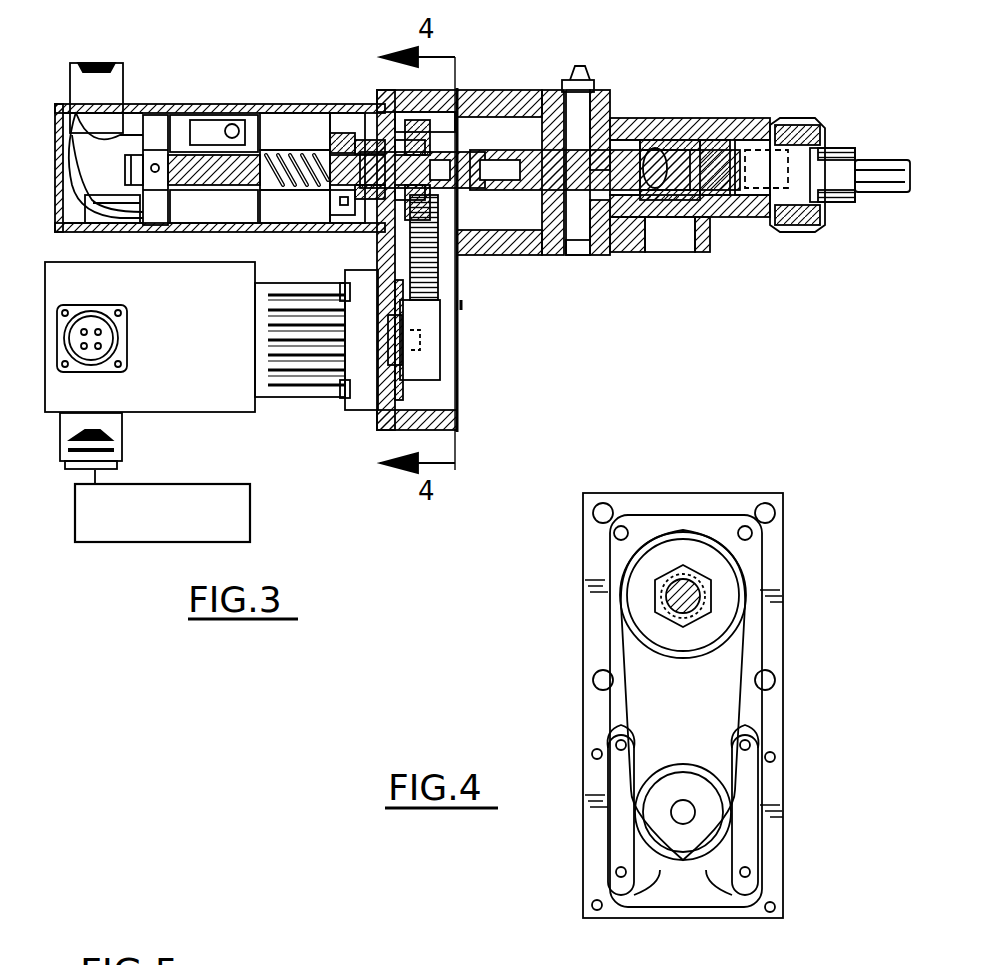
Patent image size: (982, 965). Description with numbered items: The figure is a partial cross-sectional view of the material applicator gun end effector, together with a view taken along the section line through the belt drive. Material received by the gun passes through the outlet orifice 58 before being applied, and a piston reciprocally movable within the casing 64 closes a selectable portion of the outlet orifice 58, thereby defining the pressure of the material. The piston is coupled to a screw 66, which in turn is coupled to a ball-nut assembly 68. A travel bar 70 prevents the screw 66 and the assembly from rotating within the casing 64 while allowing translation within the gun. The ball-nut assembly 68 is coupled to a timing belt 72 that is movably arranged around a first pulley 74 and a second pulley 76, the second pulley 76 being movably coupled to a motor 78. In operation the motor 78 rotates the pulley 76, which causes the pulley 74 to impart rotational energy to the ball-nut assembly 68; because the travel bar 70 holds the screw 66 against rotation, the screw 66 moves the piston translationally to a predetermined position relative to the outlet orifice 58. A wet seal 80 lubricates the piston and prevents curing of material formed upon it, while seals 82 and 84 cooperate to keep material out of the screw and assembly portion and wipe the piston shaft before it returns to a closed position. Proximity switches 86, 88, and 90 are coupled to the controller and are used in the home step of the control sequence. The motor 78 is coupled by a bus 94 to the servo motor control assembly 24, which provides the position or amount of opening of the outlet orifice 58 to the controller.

In FIG. 3, the servo motor control assembly 24 is at (250, 520).
In FIG. 3, the outlet orifice 58 is at (690, 120).
In FIG. 3, the casing 64 is at (755, 218).
In FIG. 3, the screw 66 is at (345, 130).
In FIG. 4, the screw 66 is at (705, 612).
In FIG. 3, the ball-nut assembly 68 is at (268, 150).
In FIG. 3, the travel bar 70 is at (160, 108).
In FIG. 3, the timing belt 72 is at (440, 283).
In FIG. 4, the timing belt 72 is at (740, 565).
In FIG. 3, the pulley 74 is at (440, 215).
In FIG. 4, the pulley 74 is at (728, 585).
In FIG. 3, the pulley 76 is at (425, 358).
In FIG. 3, the motor 78 is at (232, 405).
In FIG. 3, the wet seal 80 is at (580, 66).
In FIG. 3, the seal 82 is at (625, 140).
In FIG. 3, the seal 84 is at (648, 140).
In FIG. 3, the proximity switch 86 is at (115, 226).
In FIG. 3, the proximity switch 88 is at (143, 110).
In FIG. 3, the proximity switch 90 is at (210, 118).
In FIG. 3, the bus 94 is at (95, 484).